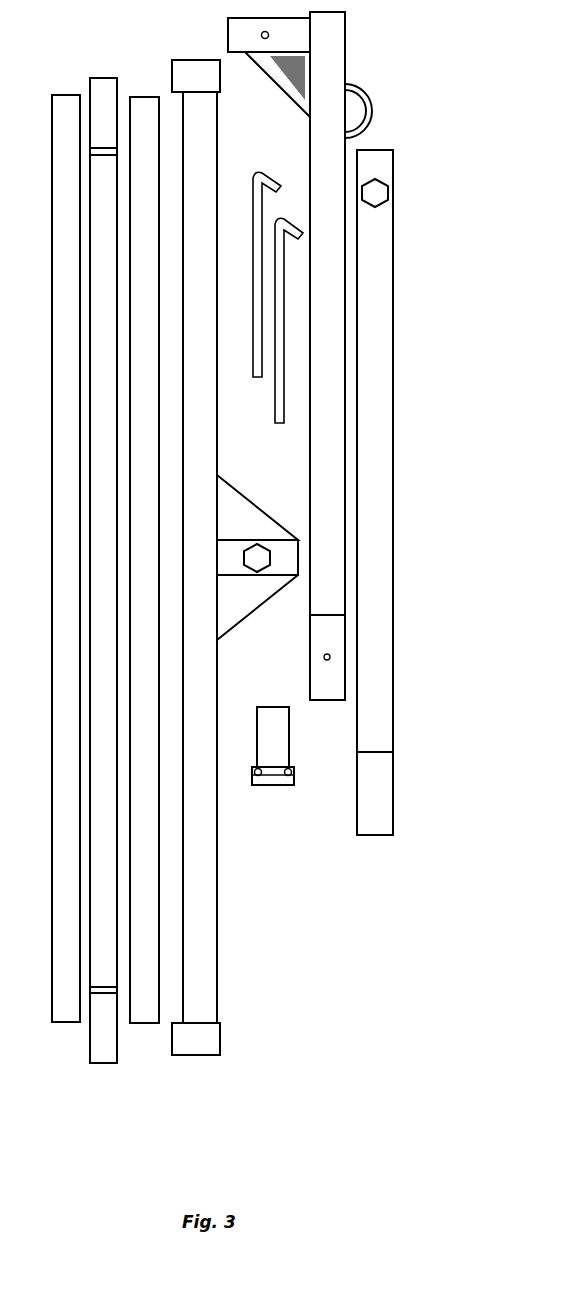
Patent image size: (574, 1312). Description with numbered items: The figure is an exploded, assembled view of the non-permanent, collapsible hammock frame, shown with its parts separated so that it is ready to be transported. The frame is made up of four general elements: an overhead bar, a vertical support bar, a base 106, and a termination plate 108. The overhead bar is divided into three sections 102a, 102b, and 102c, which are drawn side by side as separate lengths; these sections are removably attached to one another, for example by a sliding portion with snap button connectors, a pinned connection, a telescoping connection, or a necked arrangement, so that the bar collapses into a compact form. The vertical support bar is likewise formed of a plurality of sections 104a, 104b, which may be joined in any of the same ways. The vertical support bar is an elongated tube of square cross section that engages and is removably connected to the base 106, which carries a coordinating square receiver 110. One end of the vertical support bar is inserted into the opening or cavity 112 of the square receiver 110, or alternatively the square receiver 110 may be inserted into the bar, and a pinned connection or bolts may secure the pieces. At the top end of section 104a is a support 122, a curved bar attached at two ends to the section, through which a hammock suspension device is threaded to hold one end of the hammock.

The overhead bar section 102a is at (148, 1023).
The overhead bar section 102b is at (100, 1063).
The overhead bar section 102c is at (66, 1022).
The vertical support bar section 104a is at (346, 22).
The vertical support bar section 104b is at (393, 350).
The base 106 is at (221, 1040).
The termination plate 108 is at (268, 785).
The square receiver 110 is at (286, 565).
The opening or cavity 112 is at (255, 380).
The support 122 is at (372, 110).